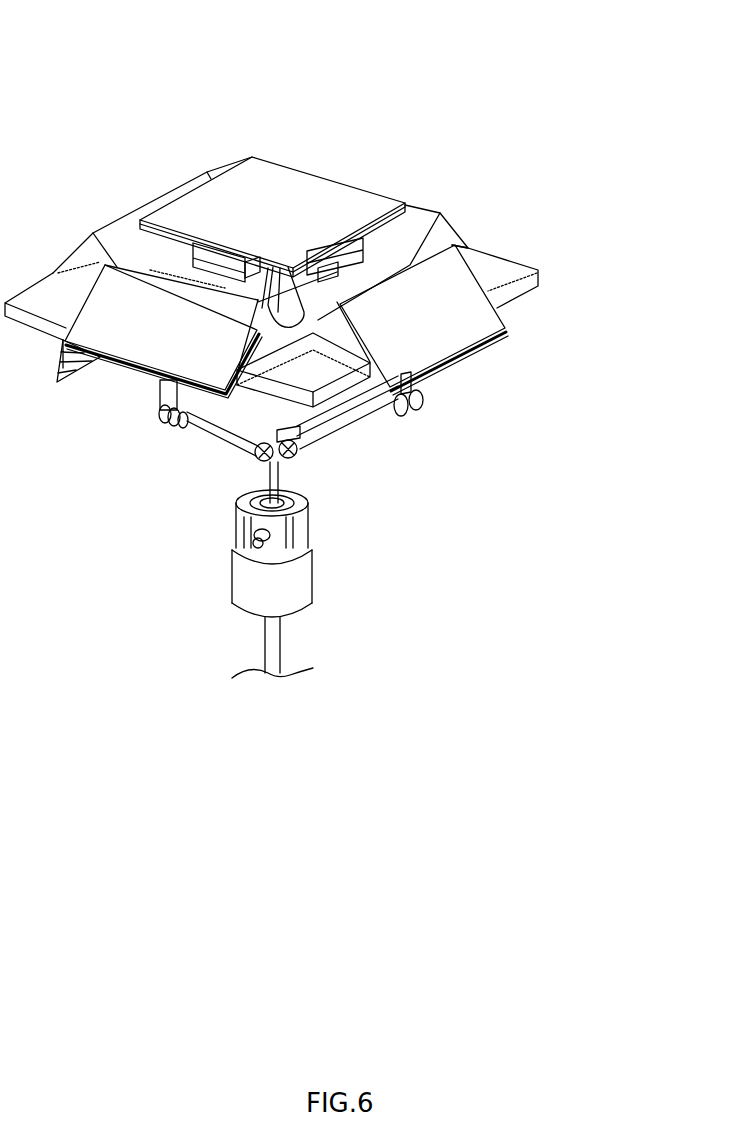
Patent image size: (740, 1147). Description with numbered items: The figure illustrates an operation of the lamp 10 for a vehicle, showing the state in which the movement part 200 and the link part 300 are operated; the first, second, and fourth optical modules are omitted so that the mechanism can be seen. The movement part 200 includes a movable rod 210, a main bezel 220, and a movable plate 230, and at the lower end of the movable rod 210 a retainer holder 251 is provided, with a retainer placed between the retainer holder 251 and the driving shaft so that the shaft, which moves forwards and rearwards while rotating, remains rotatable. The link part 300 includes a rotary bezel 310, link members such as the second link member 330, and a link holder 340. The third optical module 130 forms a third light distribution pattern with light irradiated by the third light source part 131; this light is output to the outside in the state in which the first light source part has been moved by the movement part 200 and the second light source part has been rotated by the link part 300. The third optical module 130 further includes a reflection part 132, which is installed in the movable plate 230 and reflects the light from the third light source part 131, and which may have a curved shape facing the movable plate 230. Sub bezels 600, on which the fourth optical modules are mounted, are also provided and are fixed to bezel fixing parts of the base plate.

The lamp for a vehicle 10 is at (78, 59).
The movement part 200 is at (360, 68).
The main bezel 220 is at (297, 198).
The third optical module 130 is at (537, 163).
The third light source part 131 is at (345, 280).
The reflection part 132 is at (320, 278).
The sub bezel 600 is at (537, 276).
The link part 300 is at (565, 380).
The rotary bezel 310 is at (447, 326).
The second link member 330 is at (360, 423).
The link holder 340 is at (300, 463).
The movable plate 230 is at (237, 409).
The movable rod 210 is at (280, 482).
The retainer holder 251 is at (302, 577).